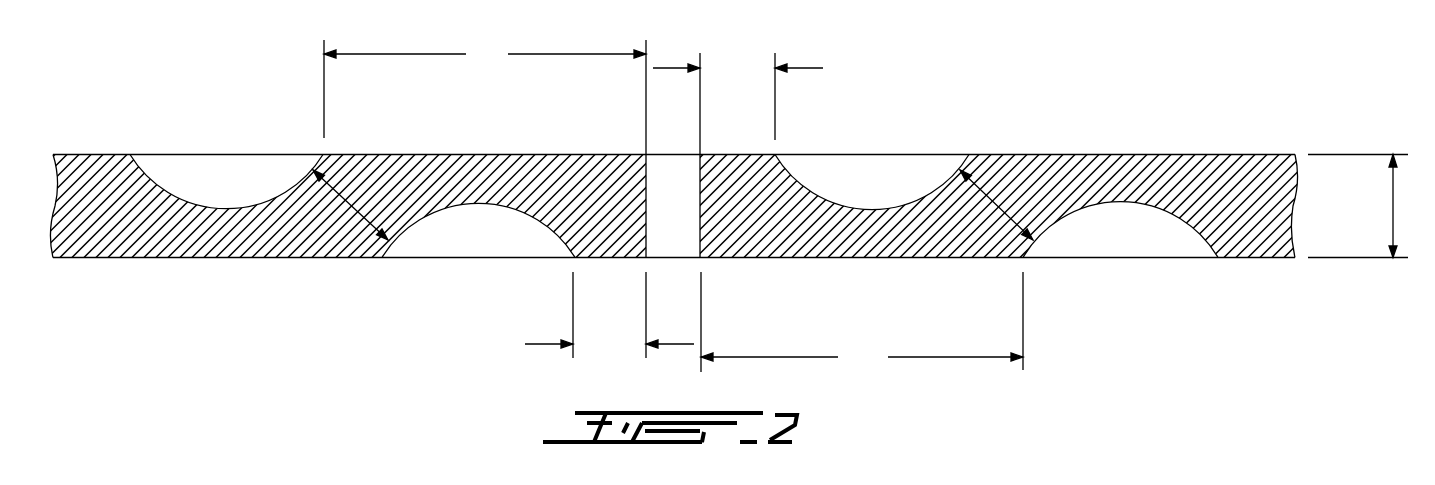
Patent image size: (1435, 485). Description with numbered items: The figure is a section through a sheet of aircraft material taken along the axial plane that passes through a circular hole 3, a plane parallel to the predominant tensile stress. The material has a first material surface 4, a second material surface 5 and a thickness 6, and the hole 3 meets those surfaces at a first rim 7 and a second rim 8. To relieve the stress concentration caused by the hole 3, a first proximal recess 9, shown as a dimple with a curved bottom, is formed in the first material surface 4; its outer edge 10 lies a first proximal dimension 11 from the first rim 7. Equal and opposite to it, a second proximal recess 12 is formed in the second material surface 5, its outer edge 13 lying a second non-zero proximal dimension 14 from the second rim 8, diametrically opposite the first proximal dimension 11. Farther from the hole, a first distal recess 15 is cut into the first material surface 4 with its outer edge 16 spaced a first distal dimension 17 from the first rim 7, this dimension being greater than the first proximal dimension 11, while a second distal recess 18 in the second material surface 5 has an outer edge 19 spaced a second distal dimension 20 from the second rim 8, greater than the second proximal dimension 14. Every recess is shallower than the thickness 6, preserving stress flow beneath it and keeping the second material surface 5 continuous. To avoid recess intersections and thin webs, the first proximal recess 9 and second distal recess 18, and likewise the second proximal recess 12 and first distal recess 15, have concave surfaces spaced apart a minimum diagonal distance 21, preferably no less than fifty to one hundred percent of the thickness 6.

The circular hole 3 is at (673, 190).
The first material surface 4 is at (84, 154).
The second material surface 5 is at (128, 258).
The thickness 6 is at (1364, 206).
The first rim 7 is at (700, 150).
The second rim 8 is at (700, 258).
The first proximal recess 9 is at (880, 157).
The outer edge 10 is at (968, 154).
The first proximal dimension 11 is at (738, 96).
The second proximal recess 12 is at (476, 248).
The outer edge 13 is at (380, 258).
The second proximal dimension 14 is at (609, 315).
The first distal recess 15 is at (225, 155).
The outer edge 16 is at (130, 154).
The first distal dimension 17 is at (485, 88).
The second distal recess 18 is at (1119, 251).
The outer edge 19 is at (1217, 258).
The second distal dimension 20 is at (862, 322).
The minimum diagonal distance 21 is at (355, 207).